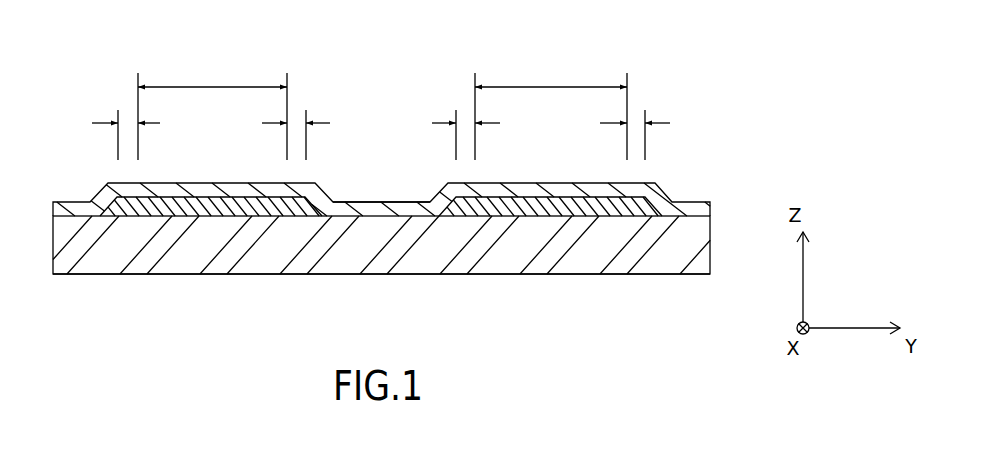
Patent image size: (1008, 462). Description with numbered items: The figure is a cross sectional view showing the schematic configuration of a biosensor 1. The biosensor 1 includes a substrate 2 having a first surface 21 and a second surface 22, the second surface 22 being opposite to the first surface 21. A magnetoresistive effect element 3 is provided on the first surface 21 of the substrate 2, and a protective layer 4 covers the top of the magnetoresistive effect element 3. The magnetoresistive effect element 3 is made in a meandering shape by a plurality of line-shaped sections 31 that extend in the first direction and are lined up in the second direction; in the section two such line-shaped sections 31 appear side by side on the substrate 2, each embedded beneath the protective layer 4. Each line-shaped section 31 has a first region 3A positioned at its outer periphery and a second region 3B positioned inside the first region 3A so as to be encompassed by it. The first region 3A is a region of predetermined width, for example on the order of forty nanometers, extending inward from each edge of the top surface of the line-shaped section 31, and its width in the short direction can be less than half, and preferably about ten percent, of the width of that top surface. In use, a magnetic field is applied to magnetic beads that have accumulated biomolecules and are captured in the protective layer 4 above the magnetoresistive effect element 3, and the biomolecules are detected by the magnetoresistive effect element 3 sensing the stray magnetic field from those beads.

The biosensor 1 is at (719, 127).
The substrate 2 is at (688, 247).
The first surface 21 is at (78, 212).
The second surface 22 is at (207, 274).
The magnetoresistive effect element 3 is at (208, 210).
The line-shaped section 31 is at (381, 206).
The first region 3A is at (128, 123).
The second region 3B is at (382, 111).
The protective layer 4 is at (380, 207).